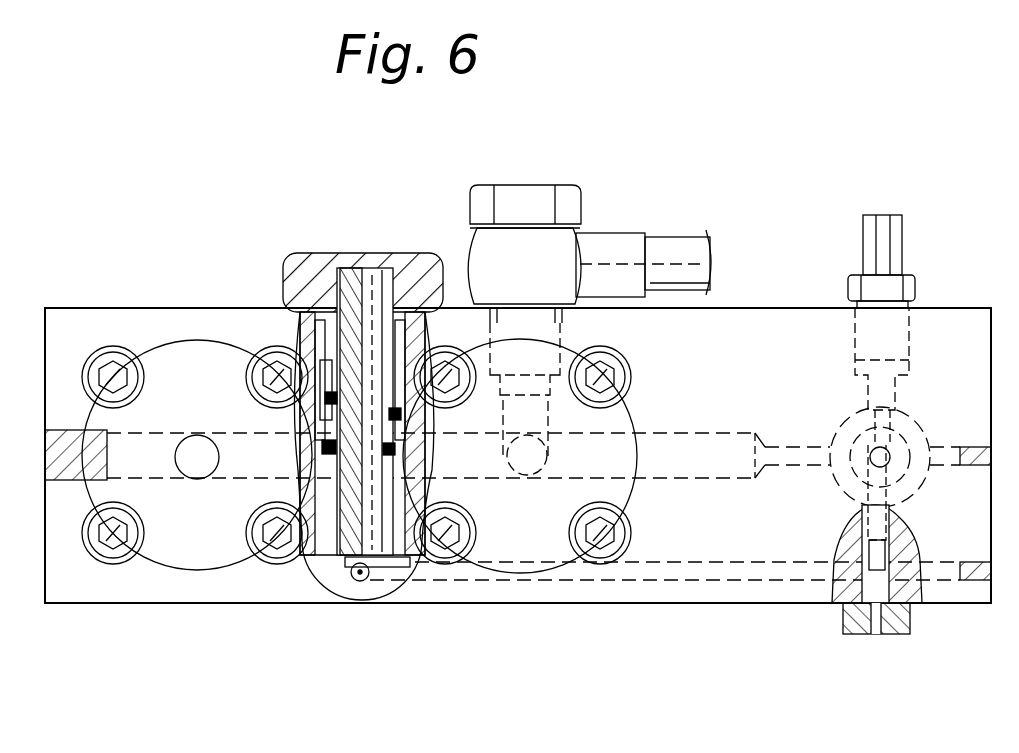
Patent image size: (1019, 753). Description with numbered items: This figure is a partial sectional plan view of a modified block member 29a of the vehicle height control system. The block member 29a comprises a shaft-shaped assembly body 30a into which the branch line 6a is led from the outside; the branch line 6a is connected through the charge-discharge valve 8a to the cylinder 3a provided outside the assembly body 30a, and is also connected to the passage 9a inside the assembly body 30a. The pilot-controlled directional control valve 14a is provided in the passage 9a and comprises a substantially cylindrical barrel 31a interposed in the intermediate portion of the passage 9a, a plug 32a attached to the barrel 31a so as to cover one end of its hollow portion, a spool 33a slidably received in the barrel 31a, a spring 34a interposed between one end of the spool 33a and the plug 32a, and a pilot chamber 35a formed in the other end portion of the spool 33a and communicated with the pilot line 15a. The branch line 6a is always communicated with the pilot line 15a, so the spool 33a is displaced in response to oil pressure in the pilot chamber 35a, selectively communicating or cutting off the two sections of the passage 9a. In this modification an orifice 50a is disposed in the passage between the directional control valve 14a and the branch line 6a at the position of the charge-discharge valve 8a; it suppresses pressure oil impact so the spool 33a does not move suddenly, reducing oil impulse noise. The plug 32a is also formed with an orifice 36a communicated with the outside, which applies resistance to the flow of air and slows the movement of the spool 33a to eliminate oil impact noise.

The pilot-controlled directional control valve 14a is at (330, 384).
The block member 29a is at (762, 202).
The cylinder 3a is at (779, 260).
The branch line 6a is at (697, 470).
The plug 32a is at (290, 254).
The spring 34a is at (352, 258).
The orifice 36a is at (365, 258).
The barrel 31a is at (250, 310).
The passage 9a is at (240, 478).
The spool 33a is at (305, 603).
The pilot chamber 35a is at (355, 603).
The pilot line 15a is at (583, 568).
The assembly body 30a is at (631, 596).
The charge-discharge valve 8a is at (834, 482).
The orifice 50a is at (905, 603).